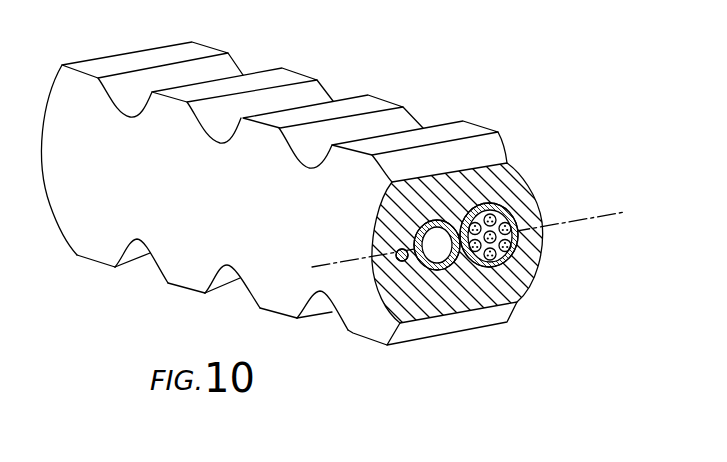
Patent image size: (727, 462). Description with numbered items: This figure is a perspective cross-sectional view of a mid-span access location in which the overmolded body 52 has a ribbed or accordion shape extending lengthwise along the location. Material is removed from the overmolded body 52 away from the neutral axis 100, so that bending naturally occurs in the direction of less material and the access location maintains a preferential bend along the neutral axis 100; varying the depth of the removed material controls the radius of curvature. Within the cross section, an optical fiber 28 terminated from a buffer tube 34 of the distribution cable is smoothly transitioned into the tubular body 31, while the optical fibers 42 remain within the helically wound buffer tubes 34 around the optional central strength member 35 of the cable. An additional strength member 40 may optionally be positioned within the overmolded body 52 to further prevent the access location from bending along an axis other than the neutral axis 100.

The optical fiber 28 is at (438, 220).
The overmolded body 52 is at (472, 235).
The central strength member 35 is at (532, 233).
The neutral axis 100 is at (560, 218).
The optical fibers 42 is at (500, 240).
The buffer tube 34 is at (507, 245).
The strength member 40 is at (404, 262).
The tubular body 31 is at (476, 298).